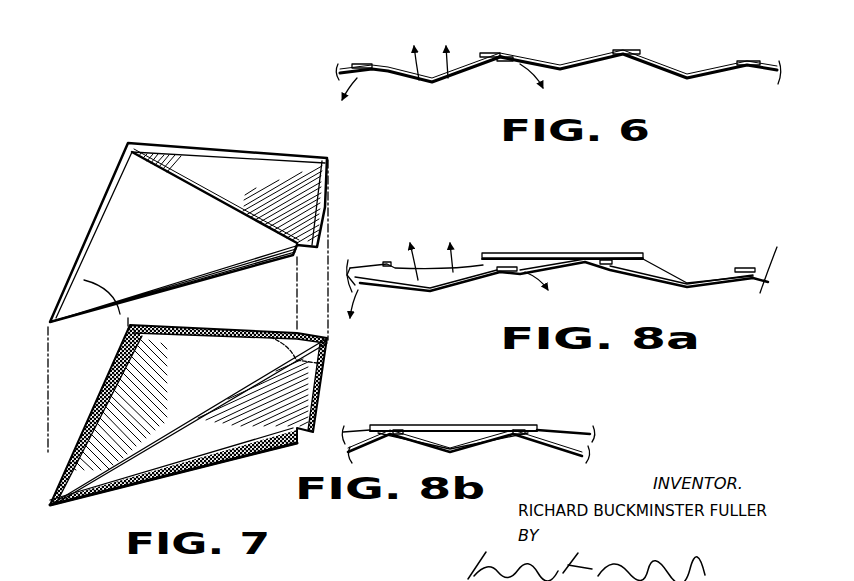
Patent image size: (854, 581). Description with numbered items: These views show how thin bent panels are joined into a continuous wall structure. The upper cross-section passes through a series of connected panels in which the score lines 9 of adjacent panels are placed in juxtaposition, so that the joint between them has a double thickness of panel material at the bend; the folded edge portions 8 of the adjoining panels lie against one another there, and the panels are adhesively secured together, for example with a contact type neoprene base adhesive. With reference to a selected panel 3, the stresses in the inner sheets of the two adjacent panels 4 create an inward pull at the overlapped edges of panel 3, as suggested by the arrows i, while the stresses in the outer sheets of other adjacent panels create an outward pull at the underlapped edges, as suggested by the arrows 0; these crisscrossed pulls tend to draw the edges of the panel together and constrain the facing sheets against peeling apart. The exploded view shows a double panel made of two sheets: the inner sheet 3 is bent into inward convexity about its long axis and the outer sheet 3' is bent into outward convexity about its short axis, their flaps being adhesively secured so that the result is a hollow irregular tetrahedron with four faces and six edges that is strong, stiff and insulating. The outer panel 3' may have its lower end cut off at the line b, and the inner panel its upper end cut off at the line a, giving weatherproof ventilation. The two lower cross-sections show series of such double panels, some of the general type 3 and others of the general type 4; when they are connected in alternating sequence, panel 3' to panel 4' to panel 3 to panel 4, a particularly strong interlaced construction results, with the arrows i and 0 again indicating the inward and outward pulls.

In FIG. 6, the panel 3 is at (558, 61).
In FIG. 8A, the panel 3 is at (562, 272).
In FIG. 8B, the panel 3 is at (469, 450).
In FIG. 7, the panel 3 is at (188, 415).
In FIG. 8A, the outer panel 3' is at (550, 256).
In FIG. 8B, the outer panel 3' is at (468, 423).
In FIG. 7, the outer panel 3' is at (188, 232).
In FIG. 6, the adjacent panel 4 is at (543, 48).
In FIG. 8A, the adjacent panel 4 is at (563, 288).
In FIG. 8B, the adjacent panel 4 is at (544, 450).
In FIG. 8A, the adjacent panel 4' is at (532, 250).
In FIG. 8B, the adjacent panel 4' is at (489, 418).
In FIG. 6, the fold 8 is at (496, 58).
In FIG. 6, the score line 9 is at (500, 57).
In FIG. 6, the outward pull arrow 0 is at (429, 51).
In FIG. 8A, the outward pull arrow 0 is at (428, 249).
In FIG. 6, the inward pull arrow i is at (446, 90).
In FIG. 8A, the inward pull arrow i is at (452, 303).
In FIG. 7, the cut-off line a is at (282, 356).
In FIG. 7, the cut-off line b is at (62, 300).